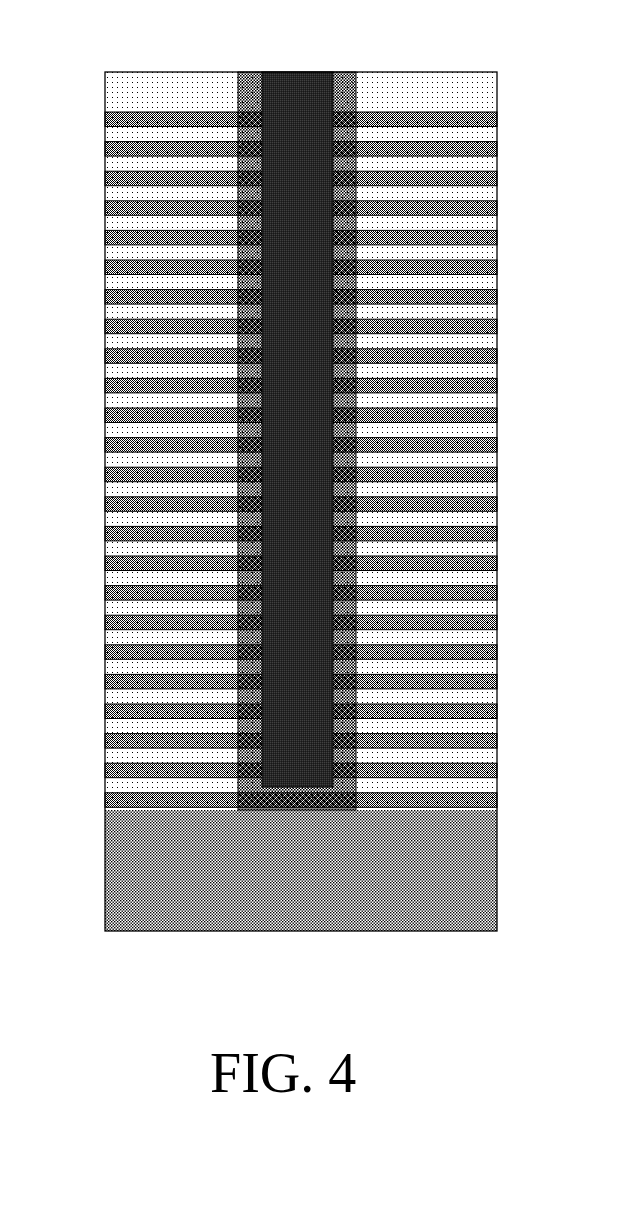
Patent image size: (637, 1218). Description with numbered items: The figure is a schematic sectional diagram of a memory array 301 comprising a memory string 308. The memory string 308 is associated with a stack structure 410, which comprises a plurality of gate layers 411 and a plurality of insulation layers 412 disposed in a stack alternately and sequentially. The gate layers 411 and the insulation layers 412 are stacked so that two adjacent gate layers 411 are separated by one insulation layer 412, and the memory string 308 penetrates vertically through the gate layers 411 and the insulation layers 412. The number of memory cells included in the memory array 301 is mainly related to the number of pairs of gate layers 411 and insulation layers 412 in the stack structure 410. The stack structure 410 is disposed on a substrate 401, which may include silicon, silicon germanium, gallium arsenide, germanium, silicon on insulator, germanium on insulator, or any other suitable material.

The memory array 301 is at (271, 468).
The memory string 308 is at (340, 62).
The substrate 401 is at (342, 898).
The stack structure 410 is at (271, 461).
The gate layers 411 is at (105, 810).
The insulation layers 412 is at (123, 372).